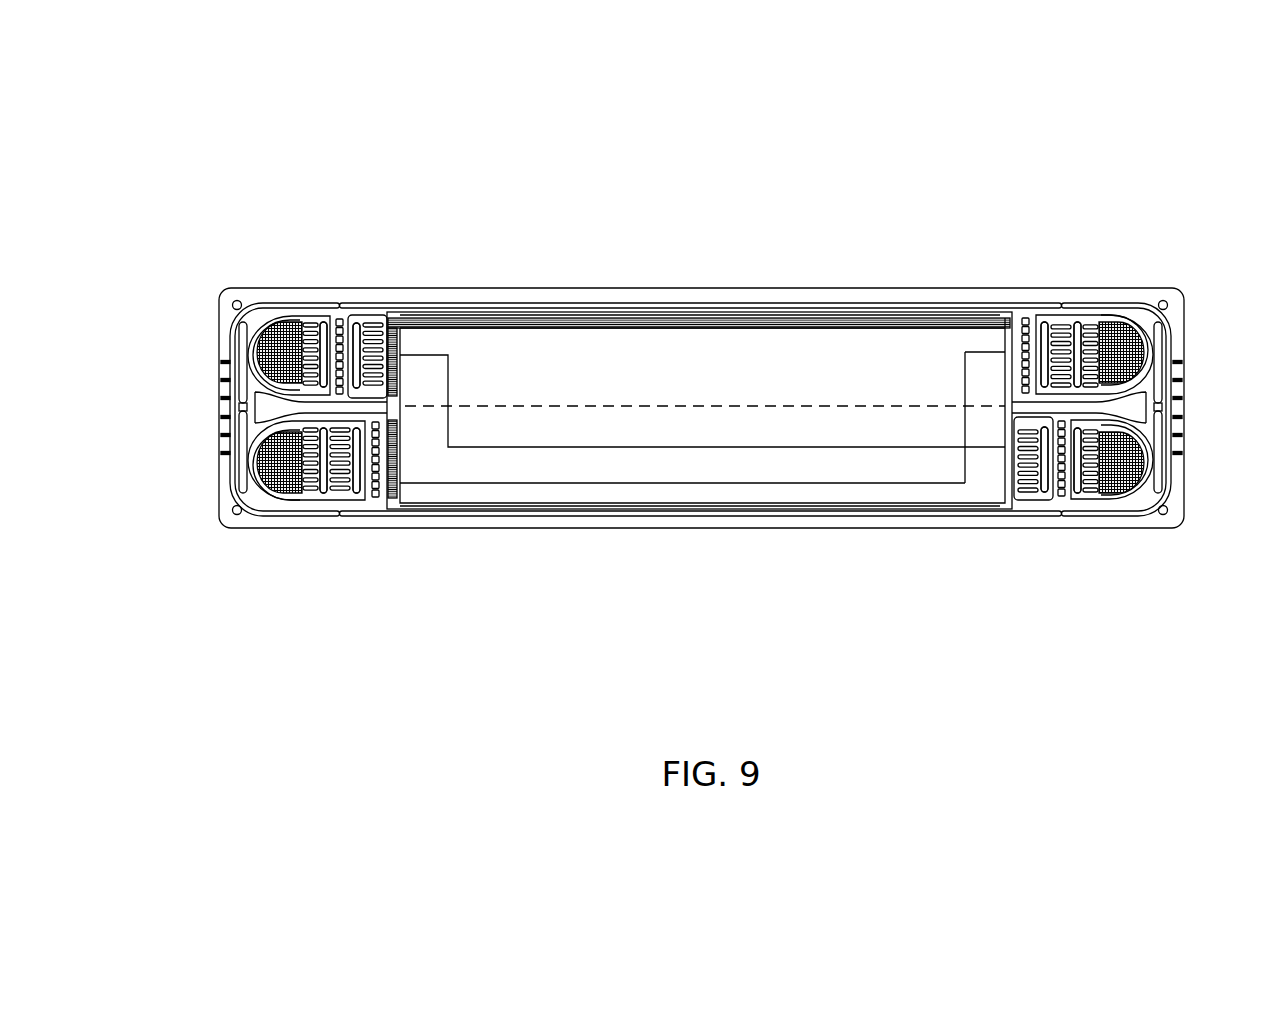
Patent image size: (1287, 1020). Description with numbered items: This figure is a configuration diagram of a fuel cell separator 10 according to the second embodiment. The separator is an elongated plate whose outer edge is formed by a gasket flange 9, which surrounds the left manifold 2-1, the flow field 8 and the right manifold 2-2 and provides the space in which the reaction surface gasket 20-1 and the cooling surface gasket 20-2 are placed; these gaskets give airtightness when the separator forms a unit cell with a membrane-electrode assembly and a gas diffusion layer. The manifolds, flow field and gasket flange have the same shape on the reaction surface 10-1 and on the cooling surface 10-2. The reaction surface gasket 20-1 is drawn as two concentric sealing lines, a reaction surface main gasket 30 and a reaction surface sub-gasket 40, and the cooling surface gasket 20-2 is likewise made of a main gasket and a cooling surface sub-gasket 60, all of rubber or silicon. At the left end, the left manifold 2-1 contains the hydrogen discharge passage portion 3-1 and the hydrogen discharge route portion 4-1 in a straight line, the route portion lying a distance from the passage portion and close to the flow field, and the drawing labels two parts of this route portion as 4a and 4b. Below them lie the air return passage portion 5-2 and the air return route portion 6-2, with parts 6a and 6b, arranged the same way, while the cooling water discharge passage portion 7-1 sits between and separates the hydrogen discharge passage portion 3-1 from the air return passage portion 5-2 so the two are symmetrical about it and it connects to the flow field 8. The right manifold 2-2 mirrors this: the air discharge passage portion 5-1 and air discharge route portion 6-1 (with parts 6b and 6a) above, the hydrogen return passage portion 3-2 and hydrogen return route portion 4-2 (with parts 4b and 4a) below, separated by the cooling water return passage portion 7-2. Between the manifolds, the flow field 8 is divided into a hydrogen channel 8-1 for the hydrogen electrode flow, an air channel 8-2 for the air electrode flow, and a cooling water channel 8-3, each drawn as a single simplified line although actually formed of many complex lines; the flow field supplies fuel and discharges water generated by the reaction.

The fuel cell separator 10 is at (668, 208).
The gasket flange 9 is at (225, 288).
The reaction surface 10-1 is at (700, 361).
The cooling surface 10-2 is at (520, 302).
The reaction surface gasket 20-1 is at (701, 210).
The cooling surface gasket 20-2 is at (701, 253).
The reaction surface sub-gasket 40 is at (701, 253).
The cooling surface sub-gasket 60 is at (786, 301).
The reaction surface main gasket 30 is at (700, 253).
The cooling water discharge passage portion 7-1 is at (267, 408).
The cooling water return passage portion 7-2 is at (1134, 408).
The hydrogen discharge passage portion 3-1 is at (279, 325).
The hydrogen return passage portion 3-2 is at (1120, 486).
The hydrogen discharge route portion 4-1 is at (332, 195).
The hydrogen return route portion 4-2 is at (1059, 541).
The first slot 4a is at (322, 325).
The second slot 4b is at (357, 324).
The air discharge passage portion 5-1 is at (1117, 326).
The air return passage portion 5-2 is at (268, 493).
The air discharge route portion 6-1 is at (1064, 200).
The air return route portion 6-2 is at (344, 542).
The third slot 6a is at (1078, 324).
The fourth slot 6b is at (1041, 324).
The left manifold 2-1 is at (309, 564).
The right manifold 2-2 is at (1087, 562).
The flow field 8 is at (699, 451).
The hydrogen channel 8-1 is at (449, 383).
The air channel 8-2 is at (965, 377).
The cooling water channel 8-3 is at (652, 406).